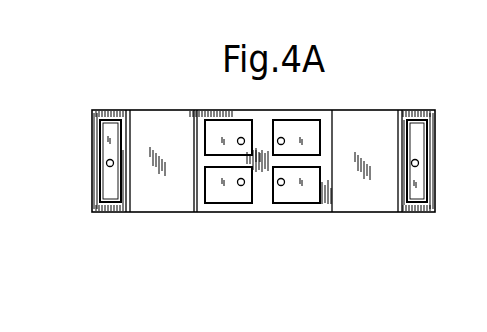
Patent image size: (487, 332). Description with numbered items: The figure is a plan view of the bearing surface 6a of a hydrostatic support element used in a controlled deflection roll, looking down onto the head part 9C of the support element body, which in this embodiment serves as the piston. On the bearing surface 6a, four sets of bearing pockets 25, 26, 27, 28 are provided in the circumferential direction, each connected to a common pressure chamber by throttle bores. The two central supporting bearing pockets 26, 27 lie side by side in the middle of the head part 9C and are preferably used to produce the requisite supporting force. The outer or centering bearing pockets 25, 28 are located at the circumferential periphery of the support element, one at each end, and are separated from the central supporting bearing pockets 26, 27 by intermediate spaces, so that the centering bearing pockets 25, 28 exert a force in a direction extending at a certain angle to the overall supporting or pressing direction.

The bearing surface 6a is at (355, 112).
The outer centering bearing pocket 25 is at (110, 192).
The central supporting bearing pocket 26 is at (218, 190).
The central supporting bearing pocket 27 is at (288, 150).
The head part 9C is at (377, 201).
The outer centering bearing pocket 28 is at (415, 195).